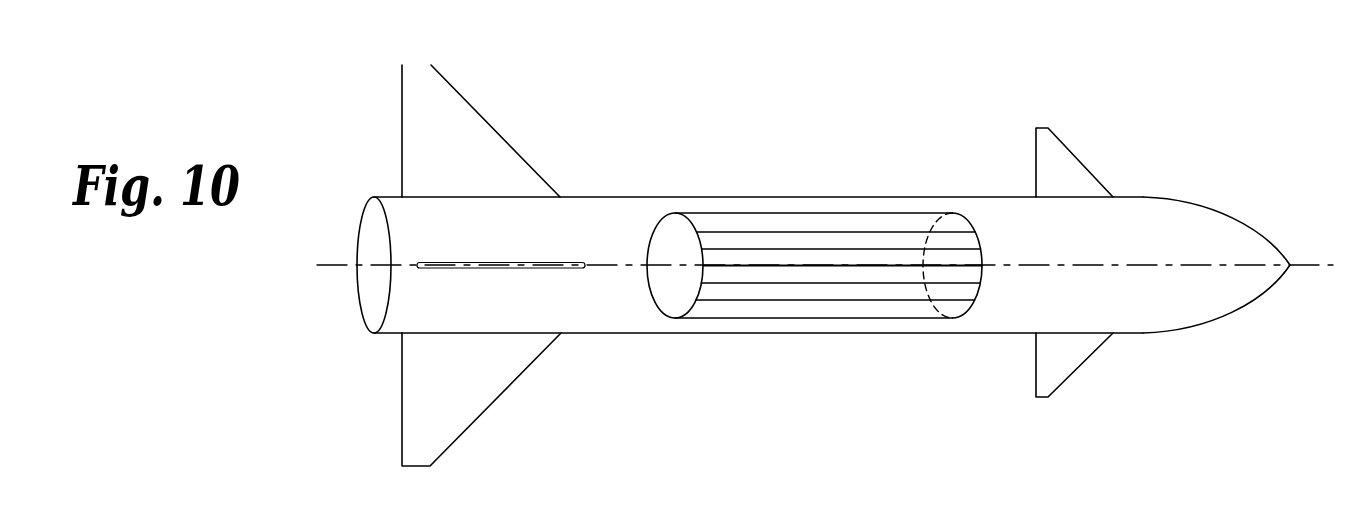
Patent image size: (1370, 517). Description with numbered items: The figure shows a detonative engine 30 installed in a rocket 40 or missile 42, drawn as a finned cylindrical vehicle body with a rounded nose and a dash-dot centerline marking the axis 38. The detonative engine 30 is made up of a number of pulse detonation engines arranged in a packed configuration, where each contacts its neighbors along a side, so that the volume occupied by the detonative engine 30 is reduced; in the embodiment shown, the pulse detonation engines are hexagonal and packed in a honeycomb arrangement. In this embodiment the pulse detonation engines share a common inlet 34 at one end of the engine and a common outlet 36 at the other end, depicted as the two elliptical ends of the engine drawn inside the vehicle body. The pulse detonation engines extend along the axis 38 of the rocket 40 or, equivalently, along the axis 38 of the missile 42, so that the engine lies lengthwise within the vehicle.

The detonative engine 30 is at (815, 308).
The inlet 34 is at (972, 292).
The outlet 36 is at (675, 300).
The axis 38 is at (839, 267).
The rocket 40 is at (1237, 285).
The missile 42 is at (1223, 300).